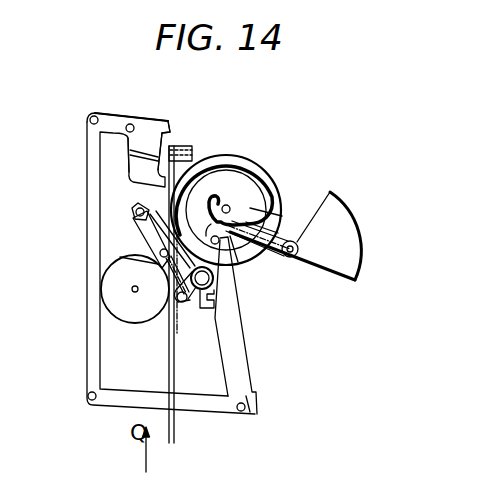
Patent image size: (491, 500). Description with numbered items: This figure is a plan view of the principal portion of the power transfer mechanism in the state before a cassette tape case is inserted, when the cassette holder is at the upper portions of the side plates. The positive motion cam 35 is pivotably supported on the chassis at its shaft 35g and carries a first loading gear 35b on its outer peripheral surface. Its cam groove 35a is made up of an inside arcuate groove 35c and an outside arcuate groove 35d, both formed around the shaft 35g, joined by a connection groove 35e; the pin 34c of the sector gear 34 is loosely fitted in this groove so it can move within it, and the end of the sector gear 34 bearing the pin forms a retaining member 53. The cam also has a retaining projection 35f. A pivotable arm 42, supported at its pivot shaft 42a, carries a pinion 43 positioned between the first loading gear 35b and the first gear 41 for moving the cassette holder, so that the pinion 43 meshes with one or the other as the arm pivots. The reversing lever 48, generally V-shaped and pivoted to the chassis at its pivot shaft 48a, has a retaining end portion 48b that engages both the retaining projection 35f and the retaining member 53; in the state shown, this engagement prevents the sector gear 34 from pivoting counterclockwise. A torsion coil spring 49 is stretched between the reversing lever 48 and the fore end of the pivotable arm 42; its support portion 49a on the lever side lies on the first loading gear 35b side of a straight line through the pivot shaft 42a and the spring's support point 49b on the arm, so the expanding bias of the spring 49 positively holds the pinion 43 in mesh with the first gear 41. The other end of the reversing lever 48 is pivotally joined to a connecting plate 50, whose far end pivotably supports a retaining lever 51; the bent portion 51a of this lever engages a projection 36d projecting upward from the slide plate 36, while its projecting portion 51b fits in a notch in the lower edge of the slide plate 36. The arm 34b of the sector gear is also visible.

The sector gear 34 is at (363, 258).
The sector arm 34b is at (305, 268).
The pin 34c is at (300, 250).
The positive motion cam 35 is at (270, 240).
The cam groove 35a is at (220, 170).
The first loading gear 35b is at (265, 175).
The inside arcuate groove 35c is at (227, 205).
The outside arcuate groove 35d is at (198, 150).
The connection groove 35e is at (301, 233).
The retaining projection 35f is at (233, 256).
The shaft 35g is at (256, 205).
The slide plate 36 is at (178, 432).
The projection 36d is at (135, 208).
The first gear for moving the cassette holder 41 is at (115, 305).
The pivotable arm 42 is at (148, 240).
The pivot shaft 42a is at (133, 216).
The pinion 43 is at (115, 262).
The reversing lever 48 is at (250, 382).
The pivot shaft 48a is at (250, 416).
The retaining end portion 48b is at (250, 247).
The torsion coil spring 49 is at (192, 305).
The support portion 49a is at (216, 302).
The support point 49b is at (178, 300).
The connecting plate 50 is at (90, 383).
The retaining lever 51 is at (108, 117).
The bent portion 51a is at (168, 126).
The projecting portion 51b is at (162, 183).
The retaining member 53 is at (208, 225).